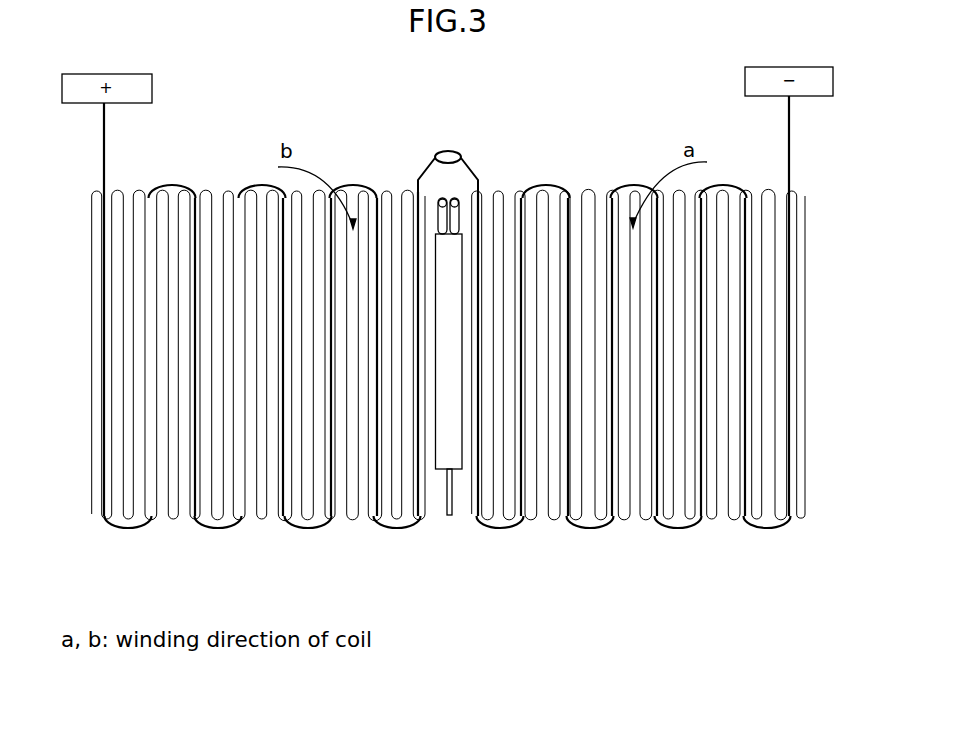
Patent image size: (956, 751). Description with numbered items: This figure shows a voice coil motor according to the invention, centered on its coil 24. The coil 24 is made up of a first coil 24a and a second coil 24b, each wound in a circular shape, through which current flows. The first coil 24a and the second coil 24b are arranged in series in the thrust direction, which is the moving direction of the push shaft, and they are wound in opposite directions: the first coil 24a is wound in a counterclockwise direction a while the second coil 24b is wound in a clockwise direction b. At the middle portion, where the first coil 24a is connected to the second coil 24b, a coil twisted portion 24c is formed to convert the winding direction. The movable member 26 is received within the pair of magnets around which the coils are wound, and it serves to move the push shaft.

The coil 24 is at (448, 375).
The first coil 24a is at (557, 503).
The second coil 24b is at (342, 500).
The coil twisted portion 24c is at (452, 152).
The movable member 26 is at (450, 300).